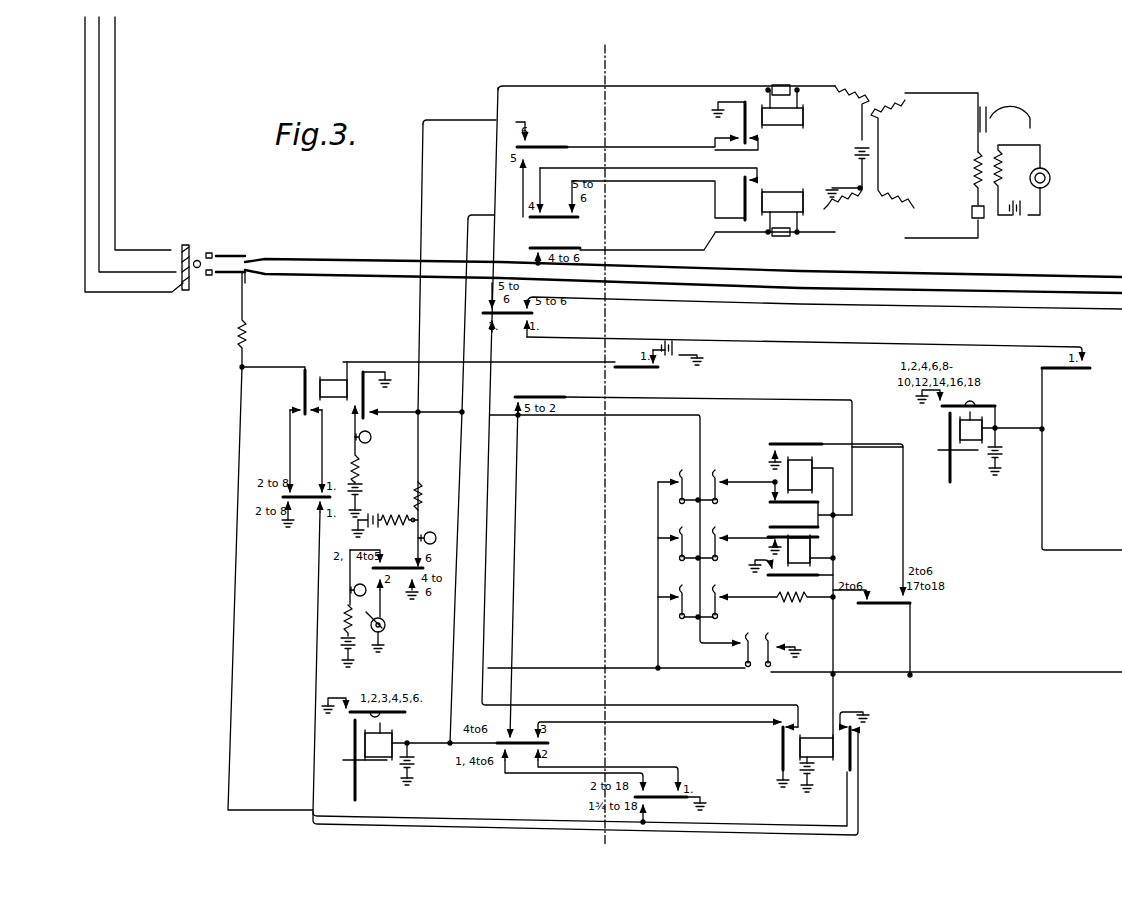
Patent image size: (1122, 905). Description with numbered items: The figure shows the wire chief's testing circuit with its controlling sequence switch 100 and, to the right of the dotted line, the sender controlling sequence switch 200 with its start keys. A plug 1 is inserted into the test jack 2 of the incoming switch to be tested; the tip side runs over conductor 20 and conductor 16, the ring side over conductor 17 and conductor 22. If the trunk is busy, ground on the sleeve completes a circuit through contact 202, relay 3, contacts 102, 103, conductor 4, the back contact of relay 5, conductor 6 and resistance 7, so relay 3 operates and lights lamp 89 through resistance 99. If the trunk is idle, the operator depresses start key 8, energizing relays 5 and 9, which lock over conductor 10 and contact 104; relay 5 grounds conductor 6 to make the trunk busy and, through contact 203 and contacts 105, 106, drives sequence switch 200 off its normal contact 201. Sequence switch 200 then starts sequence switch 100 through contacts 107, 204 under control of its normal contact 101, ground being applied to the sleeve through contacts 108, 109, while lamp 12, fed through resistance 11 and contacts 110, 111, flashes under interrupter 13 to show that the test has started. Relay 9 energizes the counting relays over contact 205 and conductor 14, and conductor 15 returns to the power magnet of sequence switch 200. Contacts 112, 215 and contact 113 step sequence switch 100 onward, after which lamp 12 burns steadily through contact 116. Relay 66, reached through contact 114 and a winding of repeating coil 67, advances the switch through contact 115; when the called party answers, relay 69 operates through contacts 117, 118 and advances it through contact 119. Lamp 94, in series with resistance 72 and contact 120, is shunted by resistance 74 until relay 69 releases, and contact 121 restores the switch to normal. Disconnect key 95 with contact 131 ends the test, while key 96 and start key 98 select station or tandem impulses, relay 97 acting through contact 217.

The plug 1 is at (226, 259).
The test jack 2 is at (176, 252).
The relay 3 is at (330, 380).
The conductor 4 is at (862, 796).
The relay 5 is at (812, 740).
The conductor 6 is at (236, 664).
The resistance 7 is at (236, 332).
The start key 8 is at (722, 470).
The relay 9 is at (836, 519).
The conductor 10 is at (778, 400).
The resistance 11 is at (345, 620).
The lamp 12 is at (350, 585).
The interrupter 13 is at (386, 624).
The conductor 14 is at (1000, 676).
The conductor 15 is at (1078, 548).
The conductor 16 is at (995, 272).
The conductor 17 is at (340, 284).
The conductor 20 is at (110, 222).
The conductor 22 is at (100, 258).
The relay 66 is at (780, 196).
The repeating coil 67 is at (890, 108).
The relay 69 is at (793, 127).
The resistance 72 is at (385, 505).
The resistance 74 is at (423, 502).
The lamp 89 is at (372, 434).
The lamp 94 is at (432, 534).
The disconnect key 95 is at (760, 640).
The key 96 is at (704, 530).
The relay 97 is at (812, 548).
The start key 98 is at (704, 588).
The resistance 99 is at (363, 468).
The sequence switch 100 is at (362, 745).
The normal contact 101 is at (345, 715).
The contact 102 is at (296, 490).
The contact 103 is at (318, 510).
The contact 104 is at (515, 396).
The contact 105 is at (523, 330).
The contact 106 is at (482, 324).
The contact 107 is at (574, 770).
The contact 108 is at (280, 518).
The contact 109 is at (292, 468).
The contact 110 is at (388, 560).
The contact 111 is at (399, 596).
The contact 112 is at (608, 768).
The contact 113 is at (572, 739).
The contact 114 is at (532, 248).
The contact 115 is at (540, 212).
The contact 116 is at (418, 598).
The contact 117 is at (548, 312).
The contact 118 is at (483, 300).
The contact 119 is at (519, 162).
The contact 120 is at (528, 145).
The contact 121 is at (580, 218).
The contact 131 is at (512, 740).
The sequence switch 200 is at (958, 430).
The normal contact 201 is at (938, 400).
The contact 202 is at (662, 368).
The contact 203 is at (1090, 358).
The contact 204 is at (670, 798).
The contact 205 is at (910, 604).
The contact 215 is at (690, 798).
The contact 217 is at (866, 604).